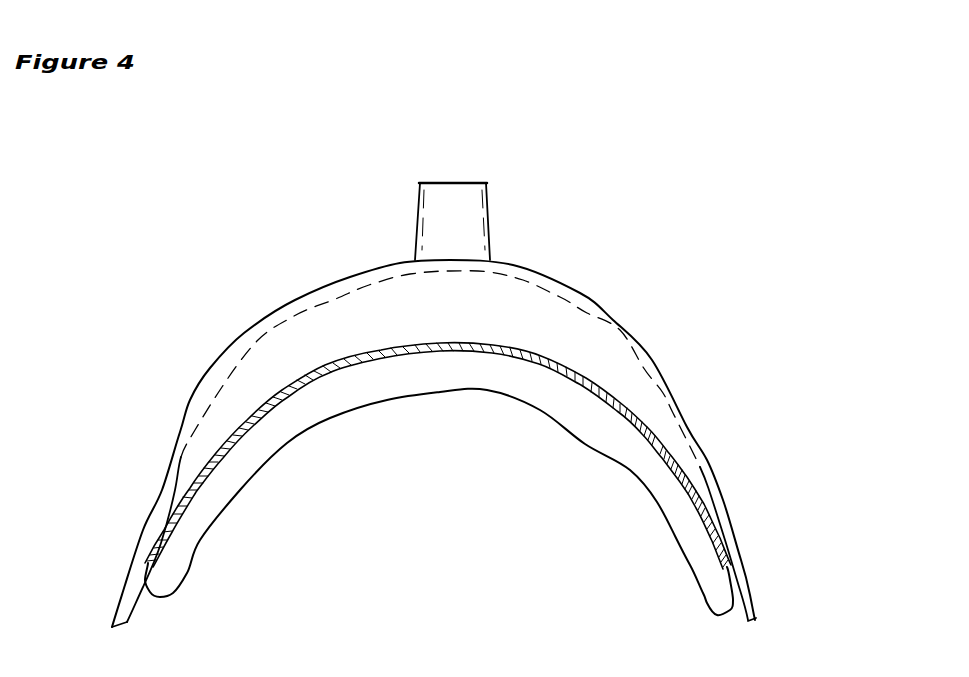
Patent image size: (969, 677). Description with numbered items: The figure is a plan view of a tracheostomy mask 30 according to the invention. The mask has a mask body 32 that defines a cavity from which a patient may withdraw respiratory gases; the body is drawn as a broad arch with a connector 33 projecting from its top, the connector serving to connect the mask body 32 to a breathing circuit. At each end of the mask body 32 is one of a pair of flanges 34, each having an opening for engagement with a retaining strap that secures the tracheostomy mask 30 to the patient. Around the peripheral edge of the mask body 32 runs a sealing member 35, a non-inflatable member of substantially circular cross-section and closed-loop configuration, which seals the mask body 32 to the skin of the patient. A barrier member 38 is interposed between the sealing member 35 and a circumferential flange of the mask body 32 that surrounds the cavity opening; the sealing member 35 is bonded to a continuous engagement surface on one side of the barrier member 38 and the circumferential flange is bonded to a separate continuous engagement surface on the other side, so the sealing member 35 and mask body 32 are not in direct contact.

The tracheostomy mask 30 is at (196, 271).
The mask body 32 is at (597, 340).
The connector 33 is at (477, 227).
The flanges 34 is at (130, 600).
The sealing member 35 is at (395, 373).
The barrier member 38 is at (680, 470).